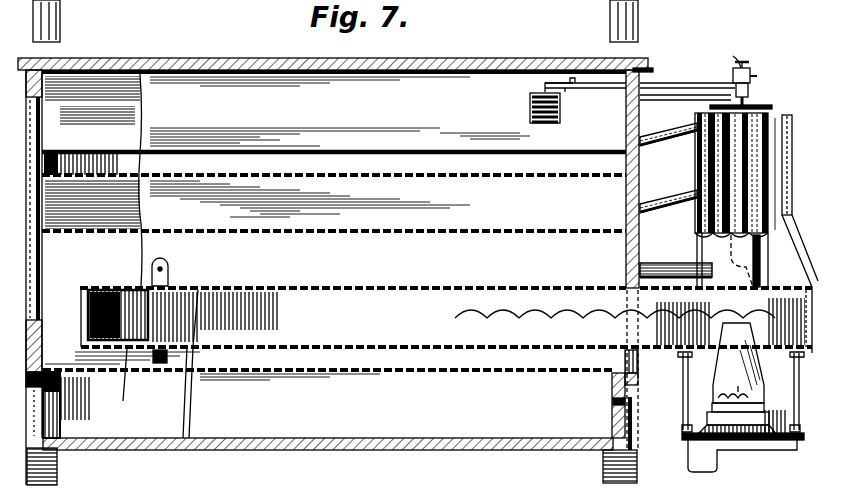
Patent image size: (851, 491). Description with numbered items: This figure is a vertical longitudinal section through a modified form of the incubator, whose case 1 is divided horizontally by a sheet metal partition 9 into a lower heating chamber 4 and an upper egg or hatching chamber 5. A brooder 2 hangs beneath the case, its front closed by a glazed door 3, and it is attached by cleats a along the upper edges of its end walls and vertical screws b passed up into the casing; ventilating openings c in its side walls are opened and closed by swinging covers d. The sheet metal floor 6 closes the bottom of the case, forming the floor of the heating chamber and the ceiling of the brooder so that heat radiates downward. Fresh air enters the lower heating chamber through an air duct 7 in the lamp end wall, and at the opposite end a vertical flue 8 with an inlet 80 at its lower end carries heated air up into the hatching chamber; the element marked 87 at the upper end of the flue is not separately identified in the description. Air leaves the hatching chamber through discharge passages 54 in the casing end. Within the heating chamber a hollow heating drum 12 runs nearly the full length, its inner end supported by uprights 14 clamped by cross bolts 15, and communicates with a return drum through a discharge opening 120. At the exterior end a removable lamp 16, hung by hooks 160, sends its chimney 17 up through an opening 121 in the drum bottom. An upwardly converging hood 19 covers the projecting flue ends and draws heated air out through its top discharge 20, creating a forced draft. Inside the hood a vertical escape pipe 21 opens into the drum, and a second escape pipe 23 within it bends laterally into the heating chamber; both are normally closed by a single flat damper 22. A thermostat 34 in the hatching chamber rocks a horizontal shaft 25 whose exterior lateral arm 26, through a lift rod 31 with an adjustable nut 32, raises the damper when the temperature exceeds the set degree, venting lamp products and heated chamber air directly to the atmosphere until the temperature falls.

The incubator case 1 is at (405, 60).
The brooder chamber 2 is at (333, 432).
The door 3 is at (60, 411).
The heating chamber 4 is at (353, 274).
The hatching chamber 5 is at (334, 114).
The floor partition 6 is at (439, 373).
The air duct 7 is at (638, 357).
The hot air flue 8 is at (334, 202).
The horizontal partition 9 is at (287, 230).
The heating drum 12 is at (446, 317).
The upright standard 14 is at (168, 279).
The cross bolt 15 is at (167, 264).
The lamp 16 is at (698, 459).
The chimney 17 is at (740, 388).
The hood 19 is at (789, 234).
The top discharge 20 is at (772, 122).
The escape pipe 21 is at (770, 191).
The damper 22 is at (761, 104).
The escape pipe 23 is at (658, 262).
The rock shaft 25 is at (663, 81).
The lateral arm 26 is at (741, 76).
The lift rod 31 is at (757, 97).
The adjustable nut 32 is at (739, 66).
The thermostat 34 is at (544, 112).
The discharge passage 54 is at (672, 141).
The air inlet 80 is at (41, 251).
The insulation 87 is at (82, 134).
The discharge opening 120 is at (118, 359).
The opening 121 is at (720, 345).
The hook 160 is at (741, 392).
The cleat a is at (70, 383).
The screw b is at (33, 385).
The ventilating opening c is at (613, 402).
The damper cover d is at (613, 415).